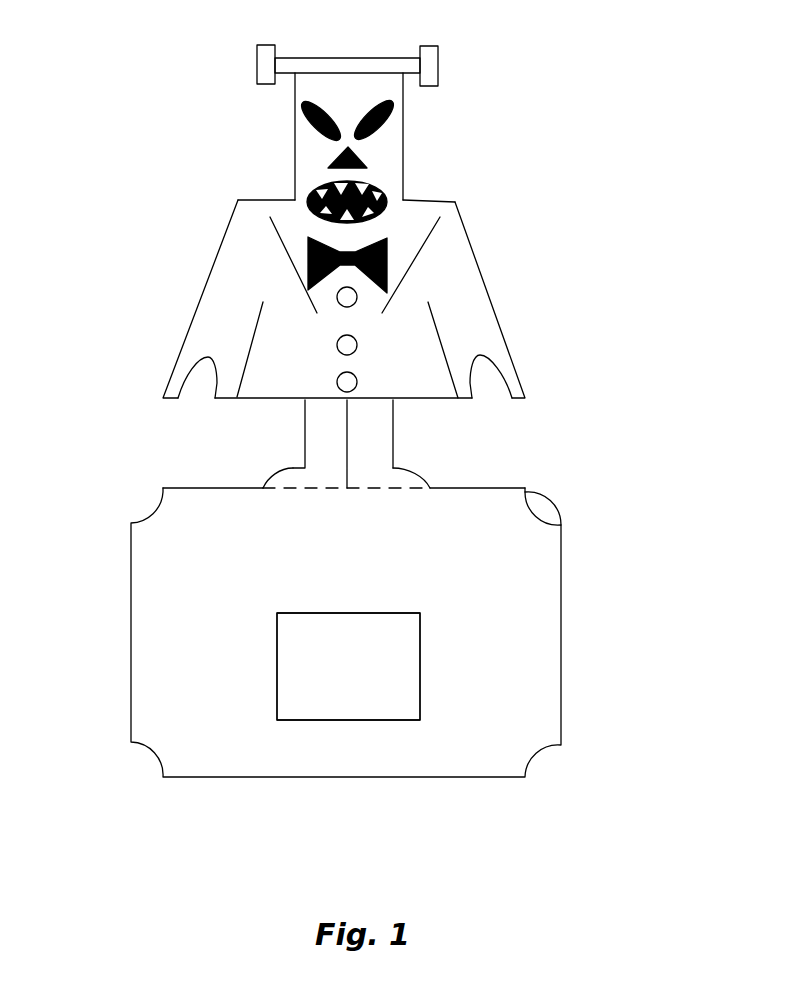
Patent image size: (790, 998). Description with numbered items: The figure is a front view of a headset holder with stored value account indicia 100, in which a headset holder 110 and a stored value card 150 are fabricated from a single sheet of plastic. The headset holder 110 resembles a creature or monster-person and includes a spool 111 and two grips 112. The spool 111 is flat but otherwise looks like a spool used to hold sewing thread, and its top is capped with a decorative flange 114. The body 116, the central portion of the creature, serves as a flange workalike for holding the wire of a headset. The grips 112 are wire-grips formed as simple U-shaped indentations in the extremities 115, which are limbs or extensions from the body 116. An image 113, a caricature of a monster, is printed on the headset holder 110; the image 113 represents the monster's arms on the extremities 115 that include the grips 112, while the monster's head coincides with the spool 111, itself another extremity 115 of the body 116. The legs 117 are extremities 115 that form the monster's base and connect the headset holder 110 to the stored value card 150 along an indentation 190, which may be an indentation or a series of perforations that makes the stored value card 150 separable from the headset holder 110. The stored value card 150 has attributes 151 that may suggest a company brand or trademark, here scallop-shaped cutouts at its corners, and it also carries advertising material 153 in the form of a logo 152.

The headset holder with stored value account indicia 100 is at (152, 110).
The headset holder 110 is at (440, 200).
The spool 111 is at (403, 147).
The grips 112 is at (213, 383).
The image 113 is at (312, 185).
The decorative flange 114 is at (410, 58).
The extremities 115 is at (198, 303).
The body 116 is at (295, 328).
The legs 117 is at (393, 452).
The indentation 190 is at (305, 490).
The stored value card 150 is at (561, 617).
The attributes 151 is at (538, 518).
The logo 152 is at (297, 720).
The advertising material 153 is at (348, 666).